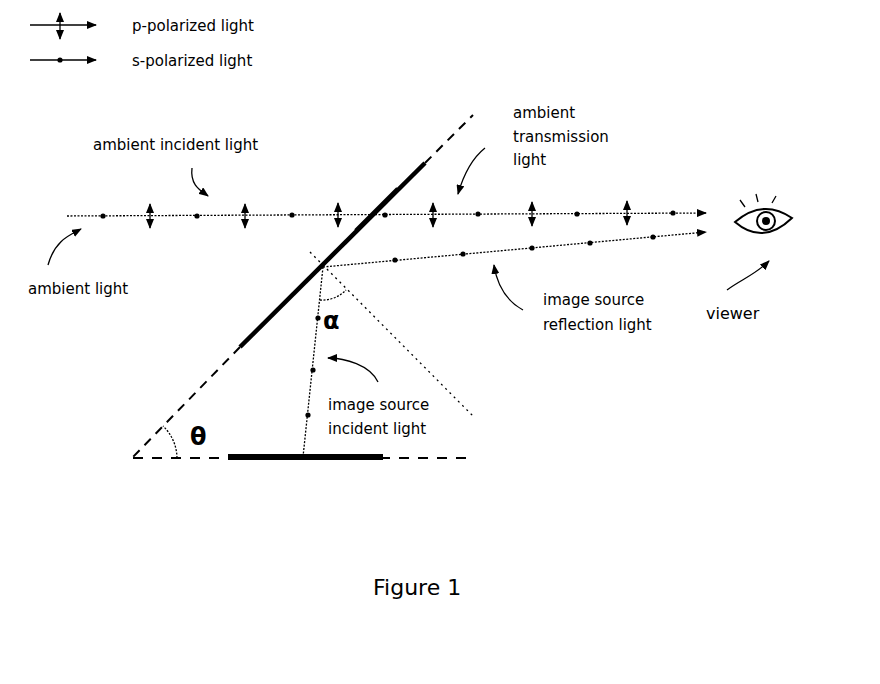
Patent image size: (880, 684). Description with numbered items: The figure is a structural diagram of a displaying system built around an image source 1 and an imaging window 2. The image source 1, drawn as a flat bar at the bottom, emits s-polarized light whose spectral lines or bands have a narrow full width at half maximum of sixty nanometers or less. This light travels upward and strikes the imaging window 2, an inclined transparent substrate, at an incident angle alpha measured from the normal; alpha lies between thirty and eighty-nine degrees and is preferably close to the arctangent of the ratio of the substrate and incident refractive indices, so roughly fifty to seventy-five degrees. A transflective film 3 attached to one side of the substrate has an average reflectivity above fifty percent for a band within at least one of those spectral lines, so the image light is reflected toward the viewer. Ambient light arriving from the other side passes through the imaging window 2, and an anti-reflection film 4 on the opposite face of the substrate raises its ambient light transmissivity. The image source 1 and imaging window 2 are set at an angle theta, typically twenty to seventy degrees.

The image source 1 is at (360, 469).
The imaging window 2 is at (421, 153).
The transflective film 3 is at (369, 233).
The anti-reflection film 4 is at (371, 191).